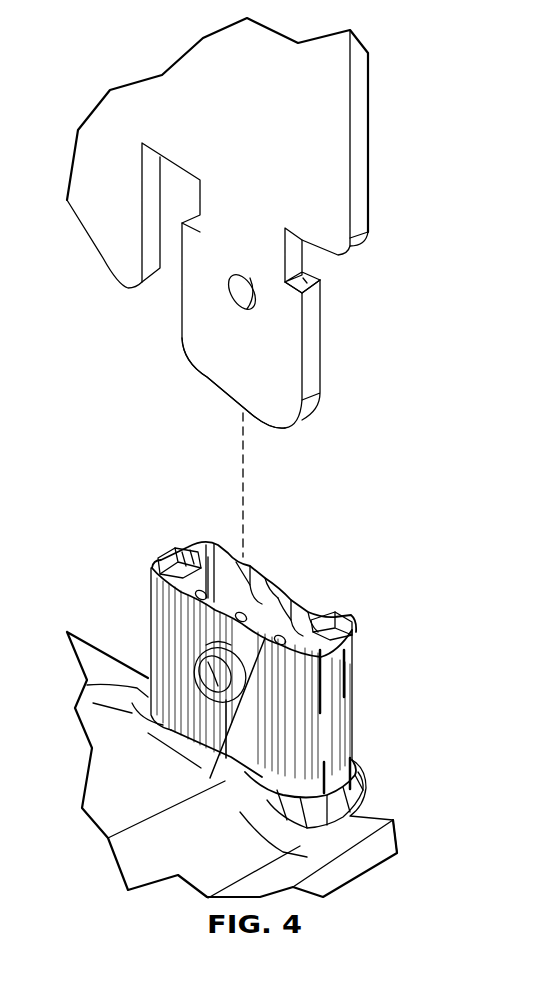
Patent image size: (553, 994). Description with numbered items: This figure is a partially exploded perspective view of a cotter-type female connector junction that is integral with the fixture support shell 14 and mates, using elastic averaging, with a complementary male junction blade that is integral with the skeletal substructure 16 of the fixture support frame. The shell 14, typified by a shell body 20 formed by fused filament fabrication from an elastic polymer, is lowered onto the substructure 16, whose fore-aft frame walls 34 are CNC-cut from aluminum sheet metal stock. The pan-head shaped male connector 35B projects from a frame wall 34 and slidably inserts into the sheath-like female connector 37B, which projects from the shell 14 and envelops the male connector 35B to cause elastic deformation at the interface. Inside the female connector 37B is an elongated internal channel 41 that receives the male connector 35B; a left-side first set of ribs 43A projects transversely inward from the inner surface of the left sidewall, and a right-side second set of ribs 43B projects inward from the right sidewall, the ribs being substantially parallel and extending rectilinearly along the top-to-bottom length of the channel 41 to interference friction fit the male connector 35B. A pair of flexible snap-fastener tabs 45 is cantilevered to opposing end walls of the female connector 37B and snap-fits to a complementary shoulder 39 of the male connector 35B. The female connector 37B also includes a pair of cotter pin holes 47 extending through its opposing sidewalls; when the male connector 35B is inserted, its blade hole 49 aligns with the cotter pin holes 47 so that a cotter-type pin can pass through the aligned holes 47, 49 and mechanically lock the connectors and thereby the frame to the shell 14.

The fixture support shell 14 is at (280, 676).
The skeletal substructure 16 is at (299, 228).
The shell body 20 is at (385, 818).
The fore-aft frame wall 34 is at (360, 91).
The male connector 35B is at (207, 362).
The female connector 37B is at (207, 727).
The shoulder 39 is at (305, 280).
The internal channel 41 is at (208, 557).
The first set of ribs 43A is at (229, 824).
The second set of ribs 43B is at (312, 613).
The snap-fastener tab 45 is at (178, 562).
The cotter pin hole 47 is at (211, 682).
The blade hole 49 is at (237, 307).